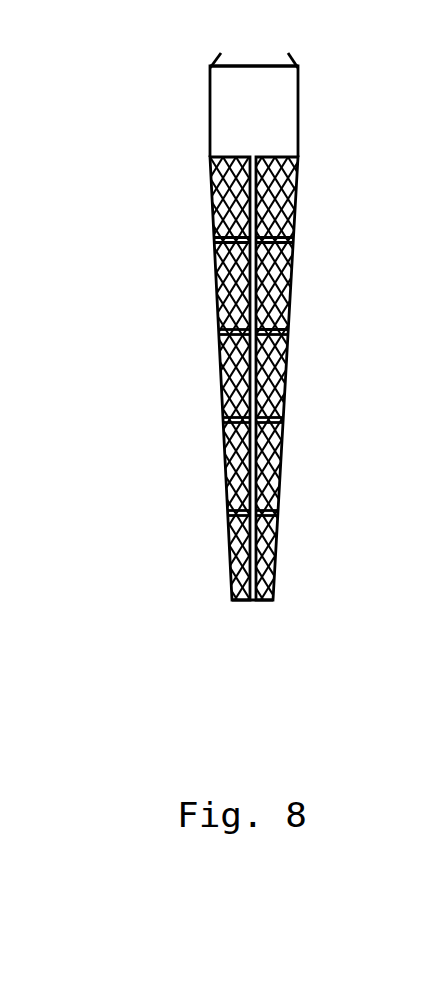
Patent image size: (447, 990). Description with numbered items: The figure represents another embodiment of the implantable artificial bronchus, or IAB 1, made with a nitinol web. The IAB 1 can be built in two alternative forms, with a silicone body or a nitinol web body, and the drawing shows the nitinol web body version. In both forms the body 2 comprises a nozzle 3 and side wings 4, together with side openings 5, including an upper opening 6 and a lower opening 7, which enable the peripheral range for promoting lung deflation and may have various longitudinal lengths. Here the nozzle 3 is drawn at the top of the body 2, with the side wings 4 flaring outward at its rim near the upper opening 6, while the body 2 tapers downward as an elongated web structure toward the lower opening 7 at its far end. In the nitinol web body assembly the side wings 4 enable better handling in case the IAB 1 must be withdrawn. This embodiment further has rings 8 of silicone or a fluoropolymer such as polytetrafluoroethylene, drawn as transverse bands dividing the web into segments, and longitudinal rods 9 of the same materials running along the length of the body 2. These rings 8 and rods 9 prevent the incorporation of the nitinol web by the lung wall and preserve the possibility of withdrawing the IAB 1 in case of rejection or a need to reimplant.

The implantable artificial bronchus (IAB) 1 is at (140, 141).
The body 2 is at (212, 212).
The nozzle 3 is at (283, 113).
The side wings 4 is at (208, 56).
The side openings 5 is at (283, 340).
The upper side opening 6 is at (257, 66).
The lower side opening 7 is at (252, 602).
The rings 8 is at (233, 593).
The longitudinal rods 9 is at (268, 453).